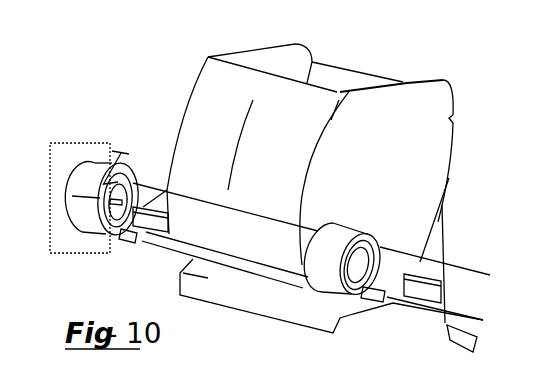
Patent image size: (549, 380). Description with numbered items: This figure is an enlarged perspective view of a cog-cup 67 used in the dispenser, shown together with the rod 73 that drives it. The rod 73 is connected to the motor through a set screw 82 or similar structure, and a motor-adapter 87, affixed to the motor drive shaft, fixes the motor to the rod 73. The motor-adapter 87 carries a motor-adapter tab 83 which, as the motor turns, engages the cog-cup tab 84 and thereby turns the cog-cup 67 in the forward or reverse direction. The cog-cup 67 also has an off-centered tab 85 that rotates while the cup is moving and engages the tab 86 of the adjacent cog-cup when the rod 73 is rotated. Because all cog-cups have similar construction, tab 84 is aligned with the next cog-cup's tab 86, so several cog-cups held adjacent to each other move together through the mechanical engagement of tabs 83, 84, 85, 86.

The cog-cup 67 is at (202, 117).
The rod 73 is at (212, 202).
The set screw 82 is at (125, 146).
The motor-adapter tab 83 is at (122, 242).
The cog-cup tab 84 is at (150, 228).
The off-centered tab 85 is at (363, 305).
The cog-cup tab 86 is at (412, 297).
The motor-adapter 87 is at (80, 205).